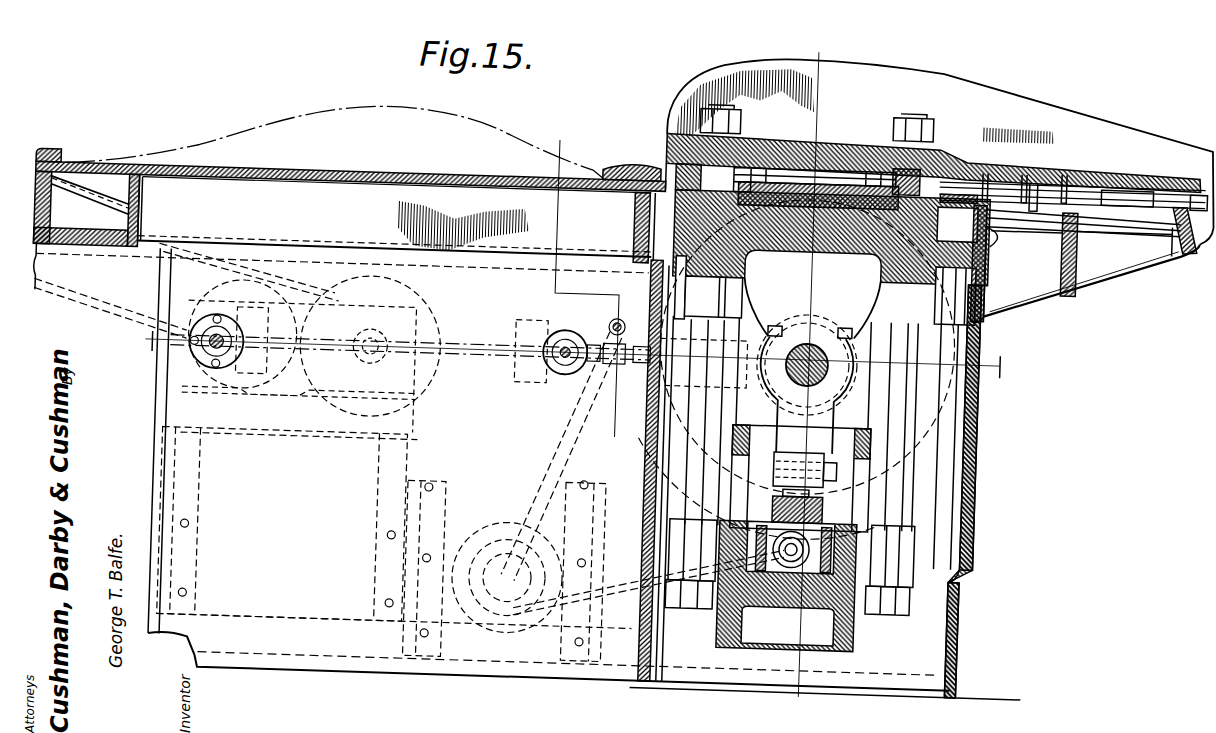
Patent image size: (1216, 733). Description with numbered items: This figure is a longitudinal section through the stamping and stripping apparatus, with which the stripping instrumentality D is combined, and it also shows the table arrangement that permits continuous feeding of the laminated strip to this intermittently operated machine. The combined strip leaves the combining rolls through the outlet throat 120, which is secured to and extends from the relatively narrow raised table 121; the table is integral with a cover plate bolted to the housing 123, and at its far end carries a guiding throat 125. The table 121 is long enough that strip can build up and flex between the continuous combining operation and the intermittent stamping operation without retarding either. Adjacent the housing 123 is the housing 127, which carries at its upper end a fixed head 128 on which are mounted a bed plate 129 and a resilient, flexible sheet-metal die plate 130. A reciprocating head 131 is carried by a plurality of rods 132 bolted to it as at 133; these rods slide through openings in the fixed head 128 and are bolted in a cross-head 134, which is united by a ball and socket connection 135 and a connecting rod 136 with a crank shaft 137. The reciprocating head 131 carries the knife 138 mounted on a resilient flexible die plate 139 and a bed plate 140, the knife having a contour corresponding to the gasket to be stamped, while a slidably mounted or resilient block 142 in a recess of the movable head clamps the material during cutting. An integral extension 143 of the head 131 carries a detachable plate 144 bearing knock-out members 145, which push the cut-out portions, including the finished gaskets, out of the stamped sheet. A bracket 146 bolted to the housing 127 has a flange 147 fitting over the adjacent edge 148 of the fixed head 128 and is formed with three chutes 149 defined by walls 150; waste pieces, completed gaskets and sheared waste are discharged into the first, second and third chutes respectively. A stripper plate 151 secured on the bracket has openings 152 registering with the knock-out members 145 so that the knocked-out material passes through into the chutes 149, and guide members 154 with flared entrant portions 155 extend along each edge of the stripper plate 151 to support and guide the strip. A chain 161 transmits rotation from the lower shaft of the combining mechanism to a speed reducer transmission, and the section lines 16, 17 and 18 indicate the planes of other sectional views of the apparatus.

The section line 16- 16 is at (805, 373).
The section line 17- 17 is at (577, 287).
The section line 18- 18 is at (570, 353).
The outlet throat 120 is at (45, 174).
The table 121 is at (273, 175).
The housing 123 is at (474, 469).
The guiding throat 125 is at (640, 180).
The housing 127 is at (962, 624).
The fixed head 128 is at (830, 255).
The bed plate 129 is at (767, 256).
The die plate 130 is at (862, 258).
The reciprocating head 131 is at (876, 127).
The rods 132 is at (904, 440).
The bolts 133 is at (906, 114).
The cross-head 134 is at (865, 636).
The ball and socket connection 135 is at (803, 567).
The connecting rod 136 is at (812, 417).
The crank shaft 137 is at (840, 385).
The knife 138 is at (780, 173).
The die plate 139 is at (748, 186).
The bed plate 140 is at (806, 190).
The block 142 is at (652, 157).
The extension 143 is at (1078, 172).
The plate 144 is at (1177, 162).
The knock-out members 145 is at (1026, 213).
The bracket 146 is at (985, 311).
The flange 147 is at (984, 231).
The edge 148 is at (988, 249).
The chutes 149 is at (1180, 244).
The walls 150 is at (1058, 282).
The stripper plate 151 is at (996, 191).
The openings 152 is at (1085, 197).
The guide members 154 is at (1026, 195).
The flared entrant portions 155 is at (933, 160).
The chain 161 is at (80, 328).
The stripping instrumentality D is at (1079, 101).